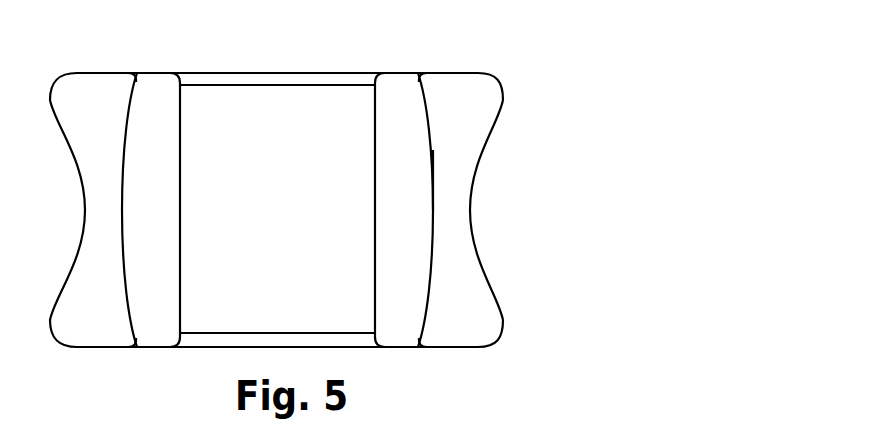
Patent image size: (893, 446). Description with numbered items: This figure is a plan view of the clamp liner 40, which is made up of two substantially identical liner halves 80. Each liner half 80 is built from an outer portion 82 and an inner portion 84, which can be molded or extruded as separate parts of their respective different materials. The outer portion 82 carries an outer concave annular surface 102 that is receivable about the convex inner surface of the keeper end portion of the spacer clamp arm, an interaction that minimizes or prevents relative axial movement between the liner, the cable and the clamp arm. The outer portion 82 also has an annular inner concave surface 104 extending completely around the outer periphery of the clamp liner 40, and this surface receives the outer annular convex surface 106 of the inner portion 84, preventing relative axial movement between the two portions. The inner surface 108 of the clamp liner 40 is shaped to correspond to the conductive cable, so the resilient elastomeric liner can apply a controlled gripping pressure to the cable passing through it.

The clamp liner 40 is at (347, 205).
The liner half 80 is at (421, 66).
The outer portion 82 is at (500, 230).
The inner portion 84 is at (395, 327).
The outer concave annular surface 102 is at (470, 193).
The annular inner concave surface 104 is at (435, 220).
The outer annular convex surface 106 is at (432, 155).
The inner surface 108 is at (266, 123).